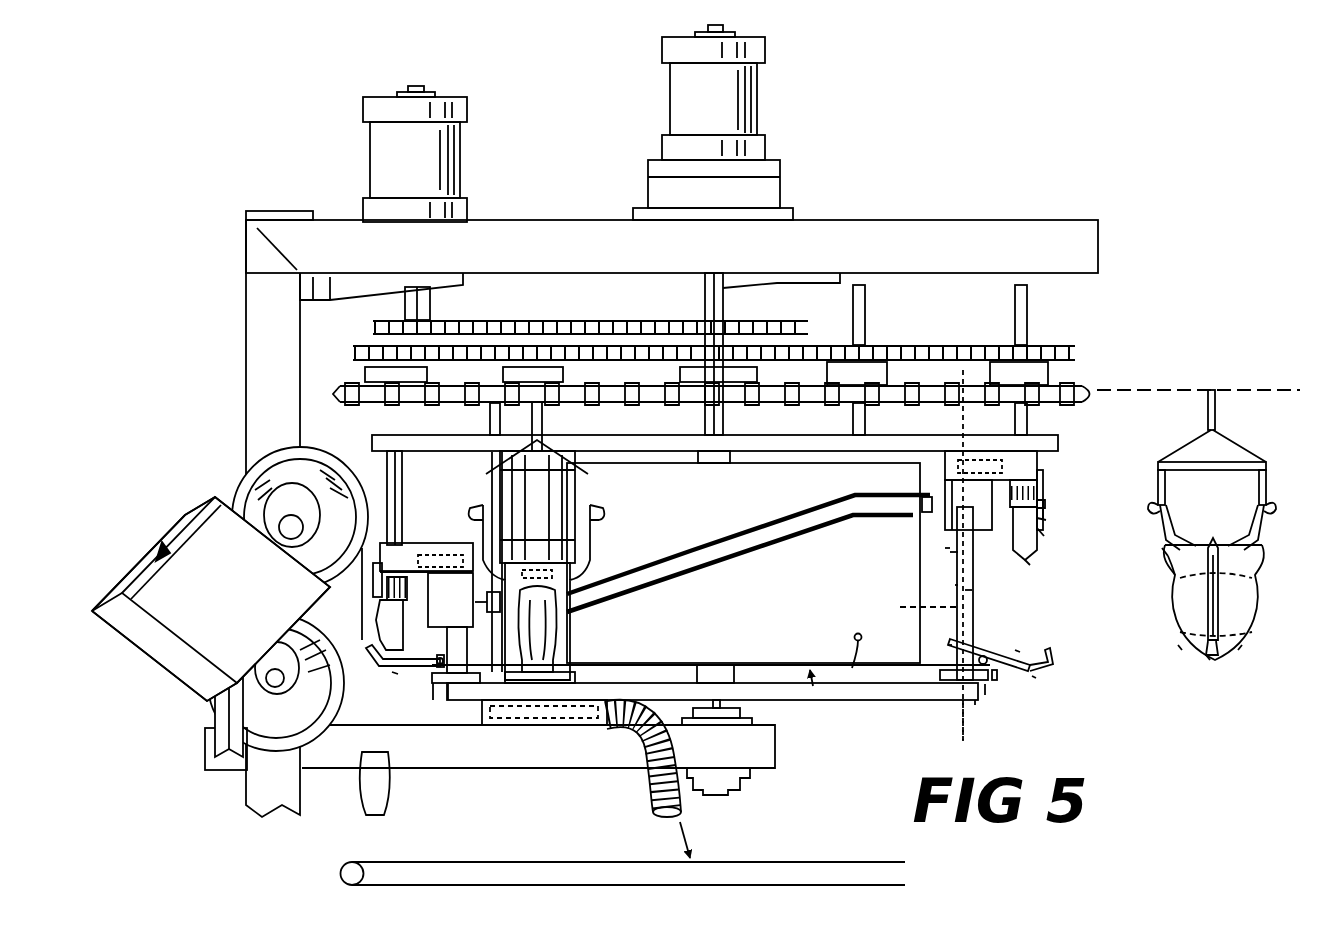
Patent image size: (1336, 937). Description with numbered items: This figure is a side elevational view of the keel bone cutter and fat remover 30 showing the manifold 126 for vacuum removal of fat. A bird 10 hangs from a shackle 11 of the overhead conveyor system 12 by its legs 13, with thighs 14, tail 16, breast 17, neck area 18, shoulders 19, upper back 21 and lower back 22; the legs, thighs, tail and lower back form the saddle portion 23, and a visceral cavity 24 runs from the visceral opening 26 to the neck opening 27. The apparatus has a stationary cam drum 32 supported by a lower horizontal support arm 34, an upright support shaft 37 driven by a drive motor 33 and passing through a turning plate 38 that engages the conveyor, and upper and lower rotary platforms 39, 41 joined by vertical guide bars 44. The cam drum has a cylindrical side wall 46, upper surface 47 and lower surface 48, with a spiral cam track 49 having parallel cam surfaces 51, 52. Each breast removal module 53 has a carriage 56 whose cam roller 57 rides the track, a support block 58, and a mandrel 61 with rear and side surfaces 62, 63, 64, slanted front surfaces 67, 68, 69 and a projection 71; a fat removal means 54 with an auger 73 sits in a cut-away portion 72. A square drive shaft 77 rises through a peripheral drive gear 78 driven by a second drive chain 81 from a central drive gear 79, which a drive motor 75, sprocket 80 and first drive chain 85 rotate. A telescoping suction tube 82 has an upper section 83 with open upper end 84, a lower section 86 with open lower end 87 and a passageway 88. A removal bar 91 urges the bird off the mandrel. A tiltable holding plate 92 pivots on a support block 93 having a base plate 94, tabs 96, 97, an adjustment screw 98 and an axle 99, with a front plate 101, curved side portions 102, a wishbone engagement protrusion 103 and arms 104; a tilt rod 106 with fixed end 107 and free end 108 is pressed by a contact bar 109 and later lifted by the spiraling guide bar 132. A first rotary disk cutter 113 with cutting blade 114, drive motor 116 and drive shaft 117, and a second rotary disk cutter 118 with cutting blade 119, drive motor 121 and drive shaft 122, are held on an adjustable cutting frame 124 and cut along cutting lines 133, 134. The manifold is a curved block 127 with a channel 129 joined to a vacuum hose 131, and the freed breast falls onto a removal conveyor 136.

The bird 10 is at (1212, 541).
The shackle 11 is at (1216, 426).
The overhead conveyor system 12 is at (1212, 390).
The legs 13 is at (1168, 528).
The thighs 14 is at (1170, 560).
The tail 16 is at (1213, 538).
The breast 17 is at (360, 803).
The neck area 18 is at (1212, 660).
The shoulders 19 is at (1178, 647).
The upper back 21 is at (1255, 635).
The lower back 22 is at (1212, 604).
The saddle portion 23 is at (1160, 562).
The visceral cavity 24 is at (1205, 606).
The visceral opening 26 is at (1165, 545).
The neck opening 27 is at (1206, 657).
The keel bone cutter and fat remover 30 is at (113, 237).
The cam drum 32 is at (813, 675).
The drive motor 33 is at (680, 106).
The lower horizontal support arm 34 is at (770, 760).
The support shaft 37 is at (700, 290).
The turning plate 38 is at (1085, 393).
The upper rotary platform 39 is at (790, 437).
The lower rotary platform 41 is at (787, 705).
The vertical guide bars 44 is at (565, 468).
The cylindrical side wall 46 is at (803, 592).
The upper surface 47 is at (645, 470).
The lower surface 48 is at (622, 663).
The spiral cam track 49 is at (748, 553).
The cam surface 51 is at (760, 530).
The cam surface 52 is at (742, 552).
The breast removal module 53 is at (691, 528).
The fat removal means 54 is at (1050, 462).
The carriage 56 is at (928, 505).
The cam roller 57 is at (492, 614).
The support block 58 is at (955, 455).
The mandrel 61 is at (418, 625).
The rear surface 62 is at (992, 522).
The side surface 63 is at (1040, 535).
The side surface 64 is at (396, 606).
The slanted front surface 67 is at (1046, 505).
The slanted front surface 68 is at (1046, 519).
The slanted front surface 69 is at (1032, 552).
The projection 71 is at (1044, 530).
The cut-away portion 72 is at (1045, 480).
The auger 73 is at (1038, 492).
The drive motor 75 is at (384, 172).
The square drive shaft 77 is at (862, 312).
The peripheral drive gear 78 is at (1030, 345).
The central drive gear 79 is at (650, 319).
The sprocket 80 is at (430, 320).
The second drive chain 81 is at (918, 345).
The telescoping suction tube 82 is at (968, 590).
The upper section 83 is at (958, 552).
The open upper end 84 is at (947, 552).
The first drive chain 85 is at (578, 318).
The lower section 86 is at (957, 585).
The open lower end 87 is at (955, 726).
The passageway 88 is at (915, 607).
The removal bar 91 is at (495, 430).
The tiltable holding plate 92 is at (660, 697).
The support block 93 is at (975, 705).
The base plate 94 is at (450, 697).
The tab 96 is at (438, 652).
The tab 97 is at (673, 639).
The adjustment screw 98 is at (996, 676).
The axle 99 is at (984, 657).
The front plate 101 is at (1034, 678).
The curved side portions 102 is at (1045, 673).
The wishbone engagement protrusion 103 is at (1048, 658).
The arms 104 is at (1018, 650).
The tilt rod 106 is at (945, 675).
The fixed end 107 is at (985, 690).
The free end 108 is at (950, 645).
The contact bar 109 is at (899, 533).
The first rotary disk cutter 113 is at (192, 583).
The cutting blade 114 is at (262, 742).
The drive motor 116 is at (120, 615).
The drive shaft 117 is at (218, 740).
The second rotary disk cutter 118 is at (163, 550).
The cutting blade 119 is at (269, 507).
The drive motor 121 is at (218, 598).
The drive shaft 122 is at (280, 520).
The adjustable cutting frame 124 is at (208, 760).
The manifold 126 is at (530, 730).
The curved block 127 is at (542, 754).
The channel 129 is at (503, 714).
The vacuum hose 131 is at (665, 790).
The guide bar 132 is at (852, 655).
The cutting lines 133 is at (1255, 630).
The cutting lines 134 is at (1255, 577).
The removal conveyor 136 is at (522, 862).